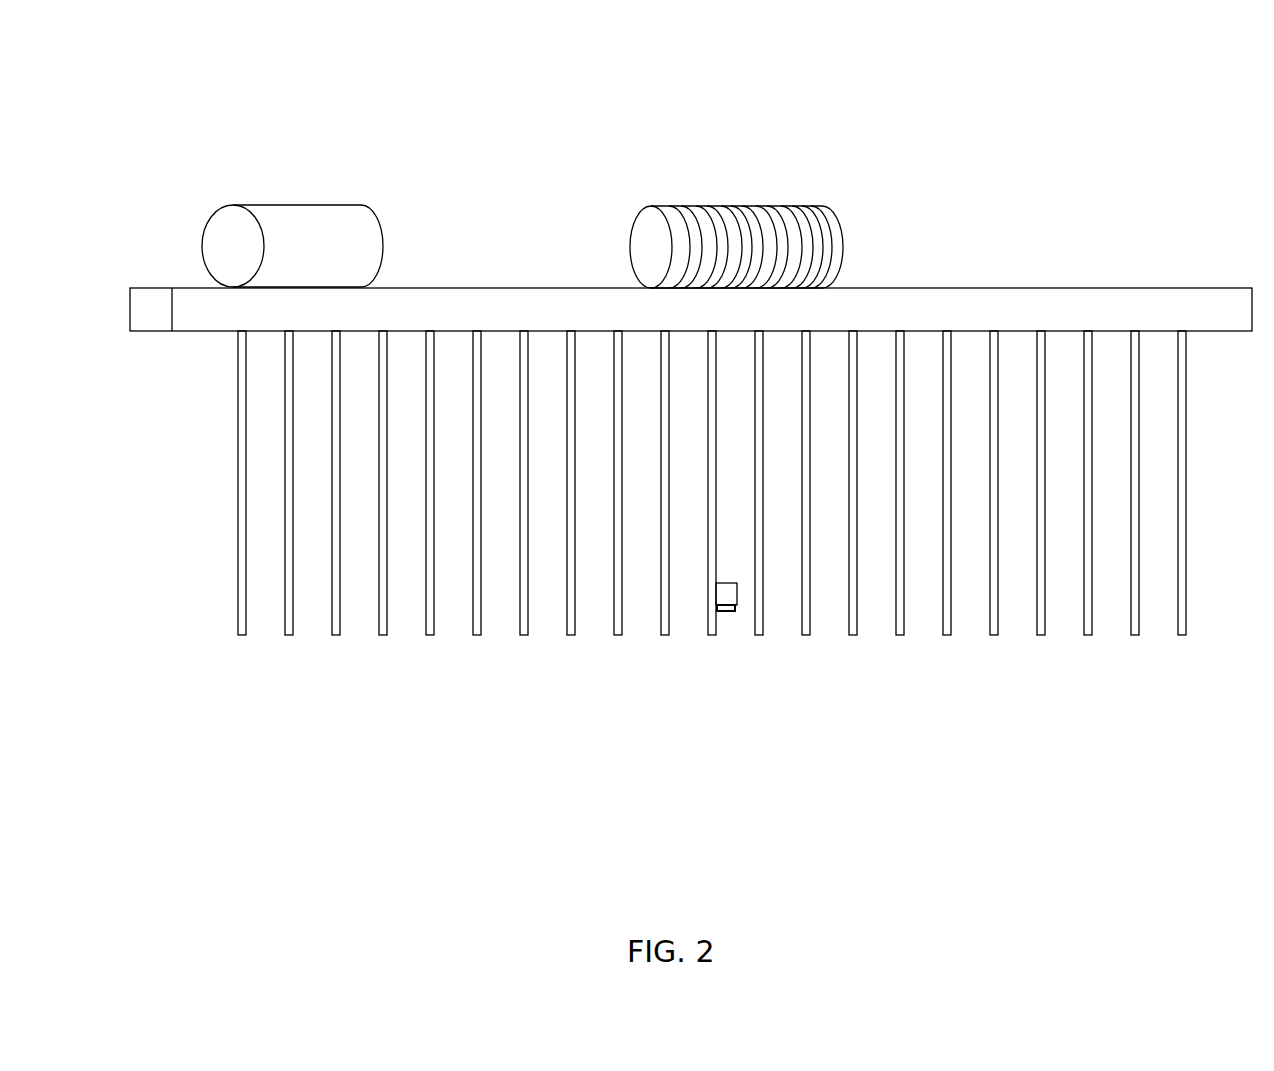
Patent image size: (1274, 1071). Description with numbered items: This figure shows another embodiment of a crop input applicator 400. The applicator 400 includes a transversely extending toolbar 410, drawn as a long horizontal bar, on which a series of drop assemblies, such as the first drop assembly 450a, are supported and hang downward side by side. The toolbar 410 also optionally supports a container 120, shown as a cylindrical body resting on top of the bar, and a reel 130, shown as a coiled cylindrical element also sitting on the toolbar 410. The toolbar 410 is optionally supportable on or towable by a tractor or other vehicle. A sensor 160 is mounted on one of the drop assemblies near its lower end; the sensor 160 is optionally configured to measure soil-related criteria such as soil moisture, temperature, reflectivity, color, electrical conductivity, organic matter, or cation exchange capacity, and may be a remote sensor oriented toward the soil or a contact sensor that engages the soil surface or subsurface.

The applicator 400 is at (78, 121).
The toolbar 410 is at (938, 288).
The drop assembly 450a is at (246, 622).
The container 120 is at (275, 205).
The reel 130 is at (740, 206).
The sensor 160 is at (737, 607).